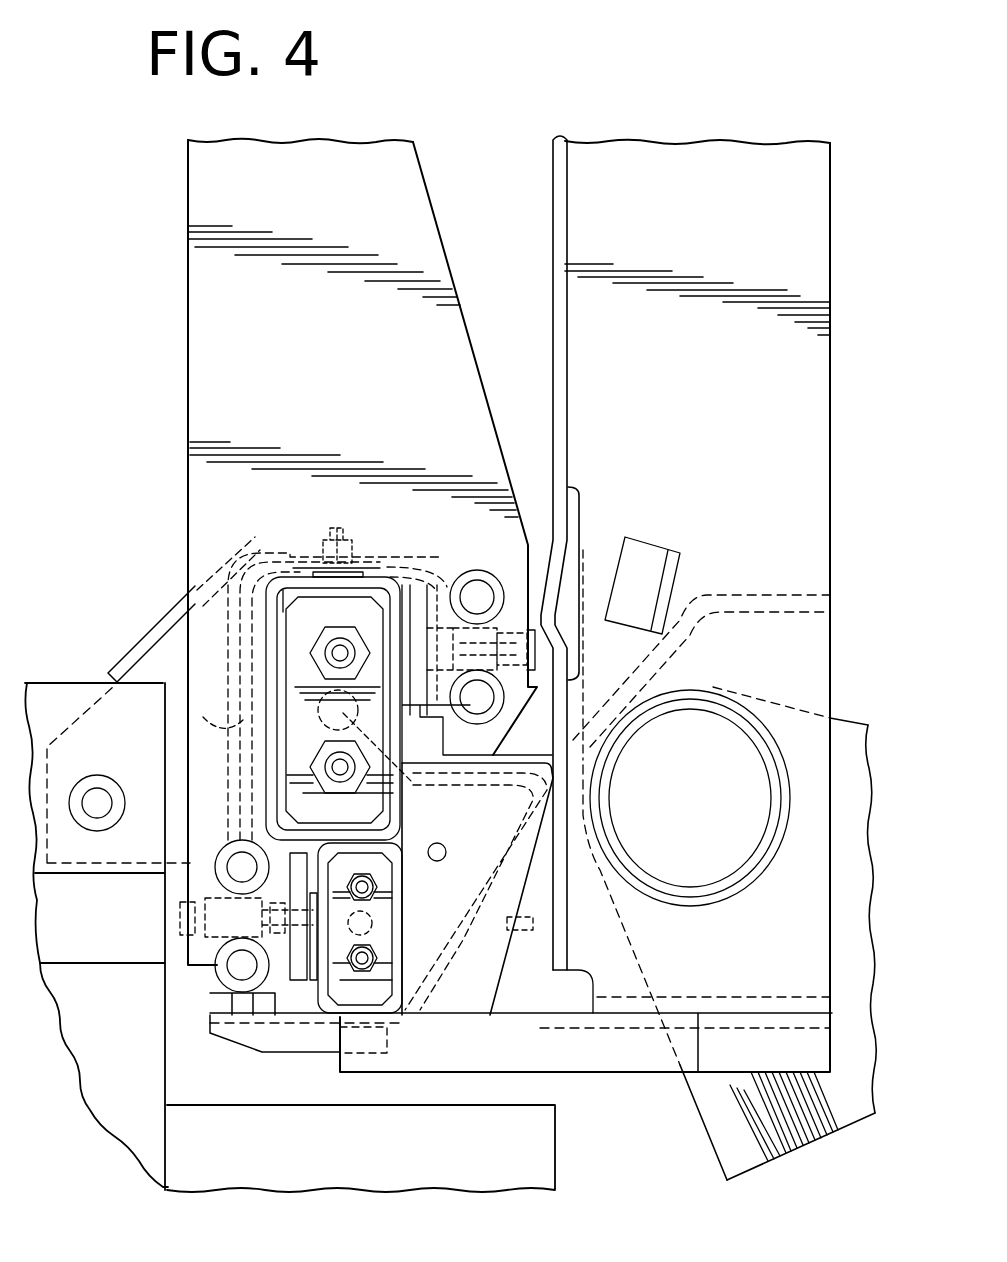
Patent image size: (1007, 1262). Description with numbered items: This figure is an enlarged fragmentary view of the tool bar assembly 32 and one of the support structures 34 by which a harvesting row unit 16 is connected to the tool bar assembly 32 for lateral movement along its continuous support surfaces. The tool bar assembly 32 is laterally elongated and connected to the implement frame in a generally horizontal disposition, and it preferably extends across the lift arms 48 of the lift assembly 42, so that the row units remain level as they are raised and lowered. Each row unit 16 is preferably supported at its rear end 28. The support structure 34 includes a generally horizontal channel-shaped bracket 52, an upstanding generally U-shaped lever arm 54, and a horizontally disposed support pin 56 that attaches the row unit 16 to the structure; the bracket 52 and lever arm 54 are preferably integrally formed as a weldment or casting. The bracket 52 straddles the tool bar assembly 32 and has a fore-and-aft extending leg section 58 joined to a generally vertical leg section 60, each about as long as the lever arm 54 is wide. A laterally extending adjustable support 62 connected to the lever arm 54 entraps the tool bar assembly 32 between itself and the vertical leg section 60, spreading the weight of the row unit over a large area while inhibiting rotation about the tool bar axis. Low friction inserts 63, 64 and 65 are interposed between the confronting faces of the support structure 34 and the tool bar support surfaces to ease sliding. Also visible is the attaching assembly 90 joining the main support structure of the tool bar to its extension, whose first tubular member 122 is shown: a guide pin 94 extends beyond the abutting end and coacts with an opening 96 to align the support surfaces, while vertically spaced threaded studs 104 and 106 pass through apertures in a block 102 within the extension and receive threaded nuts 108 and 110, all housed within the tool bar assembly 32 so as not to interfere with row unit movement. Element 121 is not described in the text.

The row unit 16 is at (90, 1113).
The rear end 28 is at (525, 1153).
The tool bar assembly 32 is at (272, 642).
The support structure 34 is at (445, 226).
The lift assembly 42 is at (727, 1182).
The lift arm 48 is at (818, 1103).
The channel-shaped bracket 52 is at (370, 563).
The lever arm 54 is at (213, 283).
The support pin 56 is at (122, 752).
The fore-and-aft extending leg section 58 is at (250, 552).
The vertical leg section 60 is at (217, 712).
The adjustable support 62 is at (432, 597).
The insert 63 is at (313, 980).
The insert 64 is at (390, 567).
The insert 65 is at (421, 720).
The attaching assembly 90 is at (312, 740).
The guide pin 94 is at (425, 775).
The opening 96 is at (323, 708).
The block 102 is at (295, 663).
The threaded stud 104 is at (327, 648).
The threaded stud 106 is at (330, 773).
The threaded nut 108 is at (355, 637).
The threaded nut 110 is at (353, 777).
The housing wall 121 is at (280, 612).
The tubular member 122 is at (397, 925).